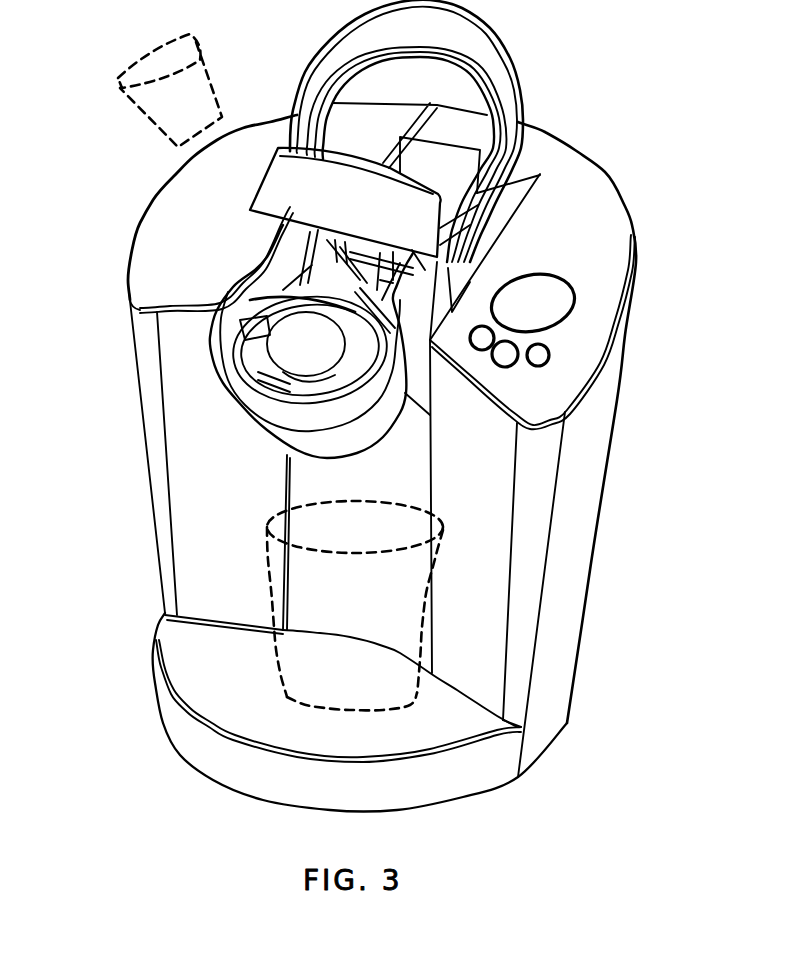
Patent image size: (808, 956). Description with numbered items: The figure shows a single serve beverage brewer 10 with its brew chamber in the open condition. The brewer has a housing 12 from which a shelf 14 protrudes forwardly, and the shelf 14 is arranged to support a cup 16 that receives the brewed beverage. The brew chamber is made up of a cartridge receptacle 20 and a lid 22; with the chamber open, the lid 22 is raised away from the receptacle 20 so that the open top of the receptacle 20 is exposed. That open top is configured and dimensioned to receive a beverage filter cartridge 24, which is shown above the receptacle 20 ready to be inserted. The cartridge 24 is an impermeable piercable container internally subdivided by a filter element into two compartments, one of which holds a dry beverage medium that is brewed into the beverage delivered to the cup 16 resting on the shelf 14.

The single serve beverage brewer 10 is at (678, 257).
The housing 12 is at (601, 437).
The shelf 14 is at (195, 690).
The cup 16 is at (262, 573).
The cartridge receptacle 20 is at (273, 431).
The lid 22 is at (280, 175).
The beverage filter cartridge 24 is at (211, 68).